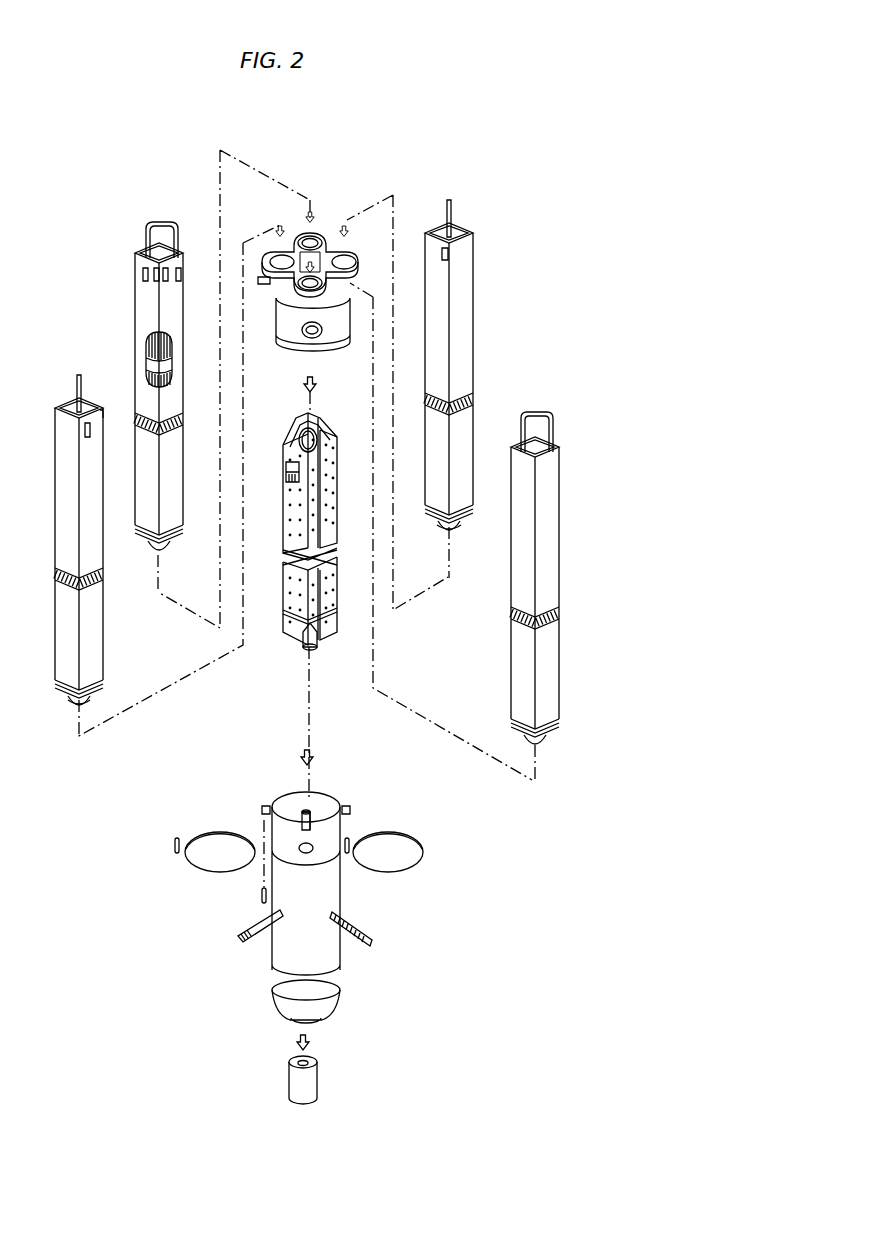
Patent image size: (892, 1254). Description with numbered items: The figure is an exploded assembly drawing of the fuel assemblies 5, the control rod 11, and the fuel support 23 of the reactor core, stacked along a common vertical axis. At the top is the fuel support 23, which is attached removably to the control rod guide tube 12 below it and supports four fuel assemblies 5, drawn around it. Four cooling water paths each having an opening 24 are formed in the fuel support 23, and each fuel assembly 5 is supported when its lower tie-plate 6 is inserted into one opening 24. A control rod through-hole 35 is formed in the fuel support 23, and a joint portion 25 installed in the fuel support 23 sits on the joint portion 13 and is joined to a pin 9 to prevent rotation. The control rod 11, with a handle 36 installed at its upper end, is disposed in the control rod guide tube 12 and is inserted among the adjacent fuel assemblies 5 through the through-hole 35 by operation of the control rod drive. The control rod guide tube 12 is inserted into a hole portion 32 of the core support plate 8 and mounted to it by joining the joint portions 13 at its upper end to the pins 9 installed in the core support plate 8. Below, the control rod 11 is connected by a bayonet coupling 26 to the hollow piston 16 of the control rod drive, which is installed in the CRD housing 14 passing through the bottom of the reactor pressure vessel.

The fuel assembly 5 is at (104, 632).
The lower tie-plate 6 is at (75, 702).
The core support plate 8 is at (242, 940).
The pin 9 is at (175, 845).
The control rod 11 is at (337, 480).
The control rod guide tube 12 is at (287, 795).
The joint portion 13 is at (262, 808).
The CRD housing 14 is at (320, 1080).
The hollow piston 16 is at (314, 818).
The fuel support 23 is at (333, 330).
The opening 24 is at (306, 278).
The joint portion 25 is at (263, 284).
The bayonet coupling 26 is at (312, 648).
The hole portion 32 is at (198, 870).
The control rod through-hole 35 is at (308, 246).
The handle 36 is at (287, 440).